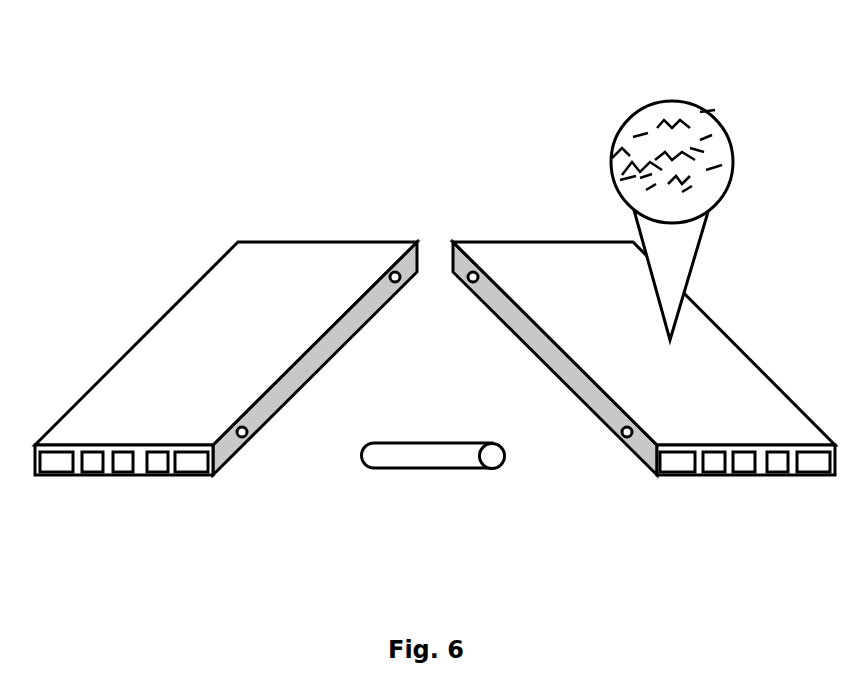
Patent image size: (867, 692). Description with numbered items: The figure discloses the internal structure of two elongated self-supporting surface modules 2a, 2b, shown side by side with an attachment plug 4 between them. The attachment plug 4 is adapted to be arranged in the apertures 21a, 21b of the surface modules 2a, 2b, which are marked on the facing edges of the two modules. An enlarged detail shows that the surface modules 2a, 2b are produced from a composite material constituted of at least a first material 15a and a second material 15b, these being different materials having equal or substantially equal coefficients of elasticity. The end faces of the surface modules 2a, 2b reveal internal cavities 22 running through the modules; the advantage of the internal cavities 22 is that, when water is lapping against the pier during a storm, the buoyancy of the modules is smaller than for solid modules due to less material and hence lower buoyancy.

The surface module 2a is at (243, 242).
The surface module 2b is at (563, 240).
The attachment plug 4 is at (460, 470).
The first material 15a is at (642, 132).
The second material 15b is at (682, 118).
The aperture 21a is at (395, 283).
The aperture 21b is at (473, 283).
The internal cavities 22 is at (182, 472).